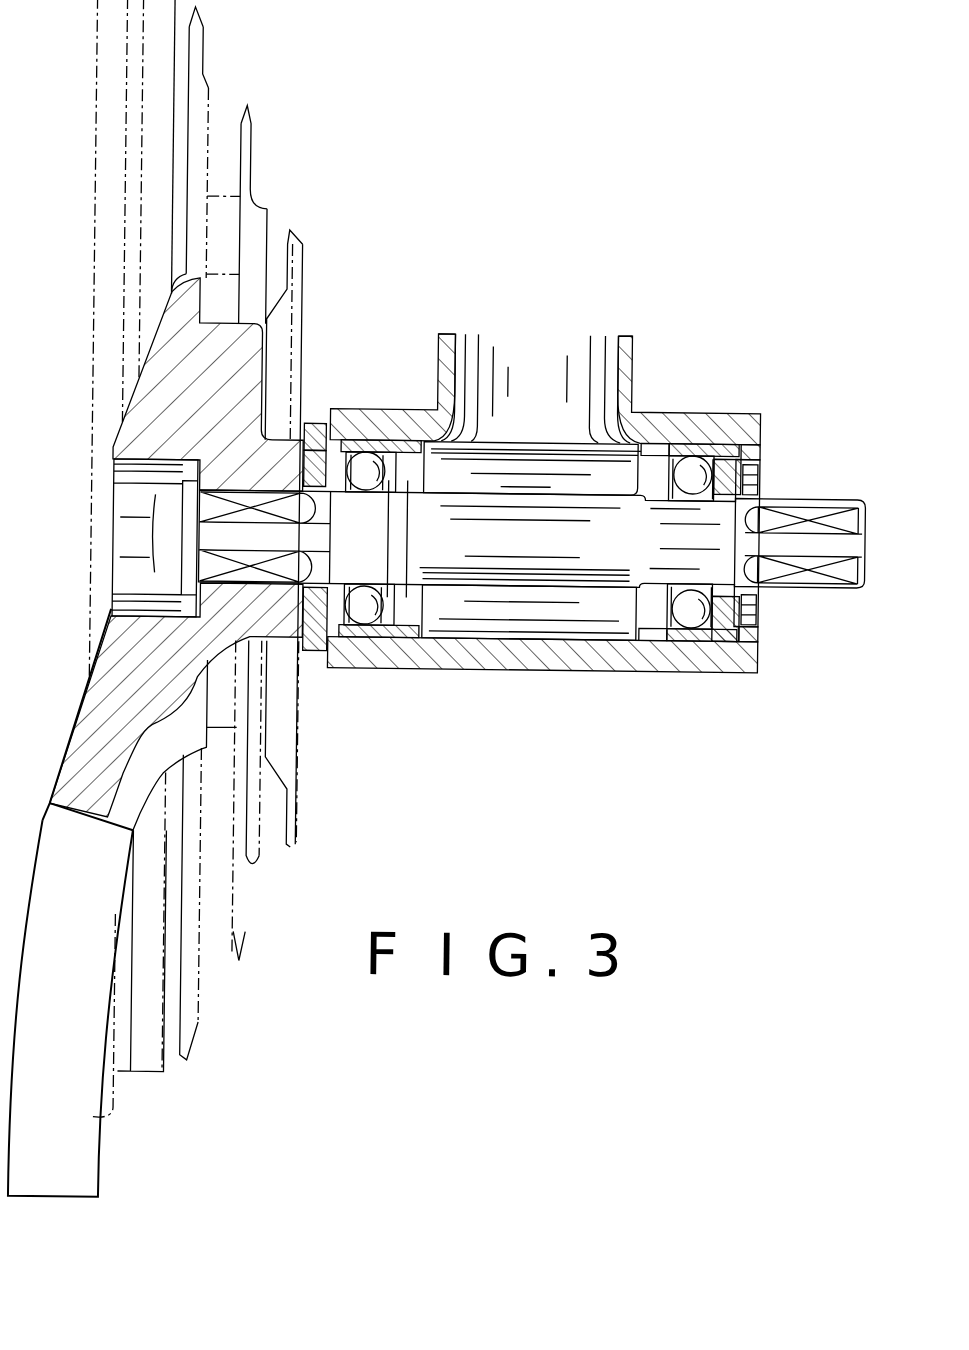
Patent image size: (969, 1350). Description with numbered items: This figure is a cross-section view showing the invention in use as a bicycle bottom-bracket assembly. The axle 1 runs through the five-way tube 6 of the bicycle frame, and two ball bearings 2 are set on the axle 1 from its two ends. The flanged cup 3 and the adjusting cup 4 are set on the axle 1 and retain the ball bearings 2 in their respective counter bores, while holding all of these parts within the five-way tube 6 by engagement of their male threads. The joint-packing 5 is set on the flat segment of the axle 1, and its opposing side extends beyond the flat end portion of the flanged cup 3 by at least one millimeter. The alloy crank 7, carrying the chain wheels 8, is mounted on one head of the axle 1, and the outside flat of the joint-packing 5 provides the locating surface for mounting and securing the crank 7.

The axle 1 is at (564, 578).
The ball bearings 2 is at (691, 466).
The flanged cup 3 is at (339, 645).
The adjusting cup 4 is at (719, 643).
The joint-packing 5 is at (310, 441).
The five-way tube 6 is at (630, 347).
The alloy crank 7 is at (133, 418).
The chain wheels 8 is at (90, 156).